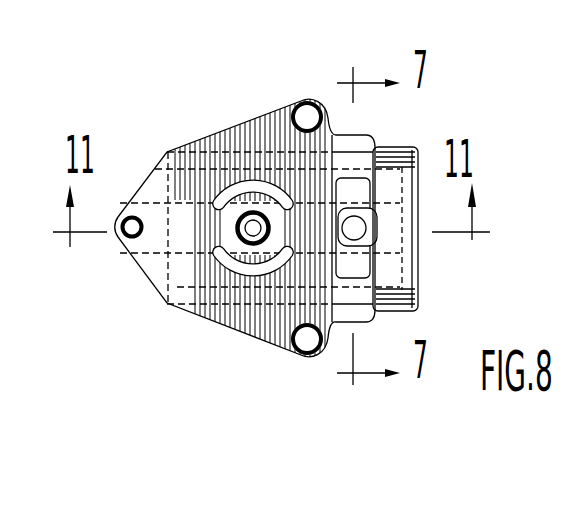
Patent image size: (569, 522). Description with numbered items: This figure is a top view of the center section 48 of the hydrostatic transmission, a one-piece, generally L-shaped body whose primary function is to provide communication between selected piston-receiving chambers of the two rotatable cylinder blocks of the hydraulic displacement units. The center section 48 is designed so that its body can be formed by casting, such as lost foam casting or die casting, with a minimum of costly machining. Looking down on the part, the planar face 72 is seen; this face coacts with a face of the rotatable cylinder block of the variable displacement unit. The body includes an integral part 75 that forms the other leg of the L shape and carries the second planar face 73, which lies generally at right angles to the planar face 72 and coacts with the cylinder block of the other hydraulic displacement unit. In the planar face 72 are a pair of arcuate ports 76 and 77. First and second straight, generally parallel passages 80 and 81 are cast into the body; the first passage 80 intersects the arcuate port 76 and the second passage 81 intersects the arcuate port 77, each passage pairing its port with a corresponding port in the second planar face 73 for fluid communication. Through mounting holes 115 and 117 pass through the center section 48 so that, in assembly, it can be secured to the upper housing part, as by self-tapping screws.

The center section 48 is at (158, 305).
The planar face 72 is at (250, 118).
The second planar face 73 is at (420, 290).
The integral part 75 is at (417, 145).
The arcuate port 76 is at (228, 190).
The arcuate port 77 is at (263, 277).
The first passage 80 is at (232, 168).
The second passage 81 is at (200, 297).
The through mounting hole 115 is at (307, 340).
The through mounting hole 117 is at (313, 101).